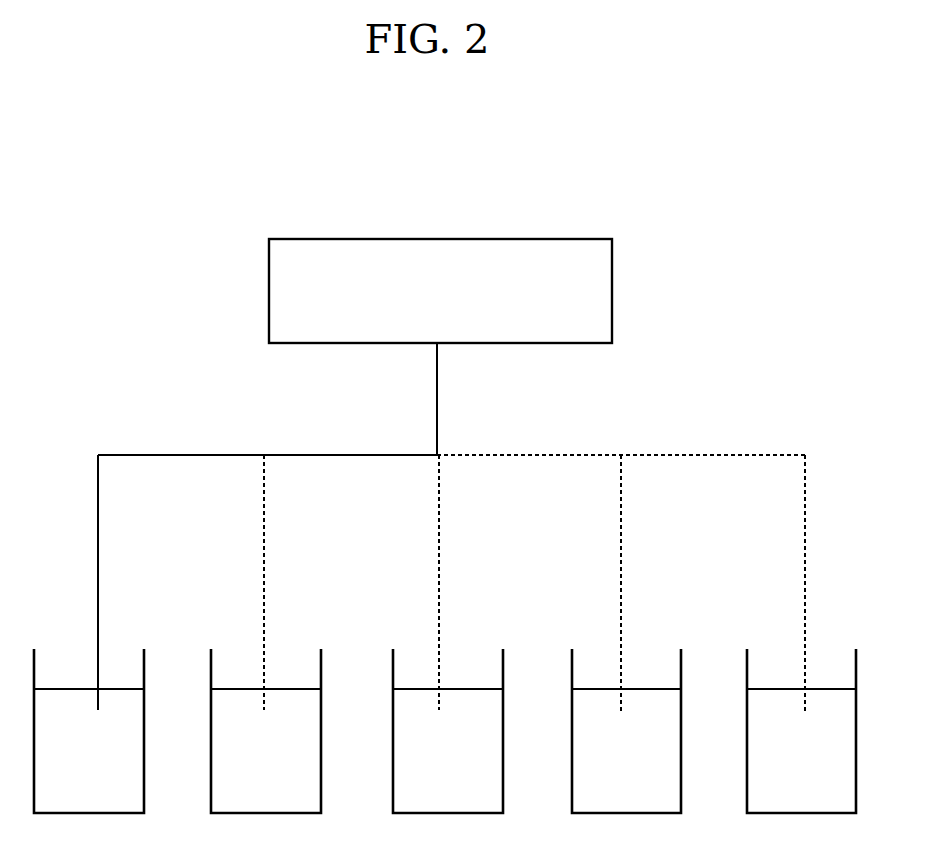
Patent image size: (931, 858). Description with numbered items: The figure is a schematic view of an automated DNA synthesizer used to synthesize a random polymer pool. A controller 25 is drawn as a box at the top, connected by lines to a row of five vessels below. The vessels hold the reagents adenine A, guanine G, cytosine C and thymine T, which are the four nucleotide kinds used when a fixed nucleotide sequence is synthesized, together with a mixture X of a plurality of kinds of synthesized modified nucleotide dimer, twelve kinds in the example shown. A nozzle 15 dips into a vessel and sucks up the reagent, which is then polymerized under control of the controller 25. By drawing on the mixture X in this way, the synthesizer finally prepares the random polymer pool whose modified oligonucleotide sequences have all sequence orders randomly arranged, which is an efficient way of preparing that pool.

The controller 25 is at (440, 291).
The nozzle 15 is at (98, 548).
The adenine A is at (89, 731).
The guanine G is at (266, 731).
The cytosine C is at (448, 731).
The thymine T is at (626, 731).
The mixture of modified nucleotide dimers X is at (801, 731).